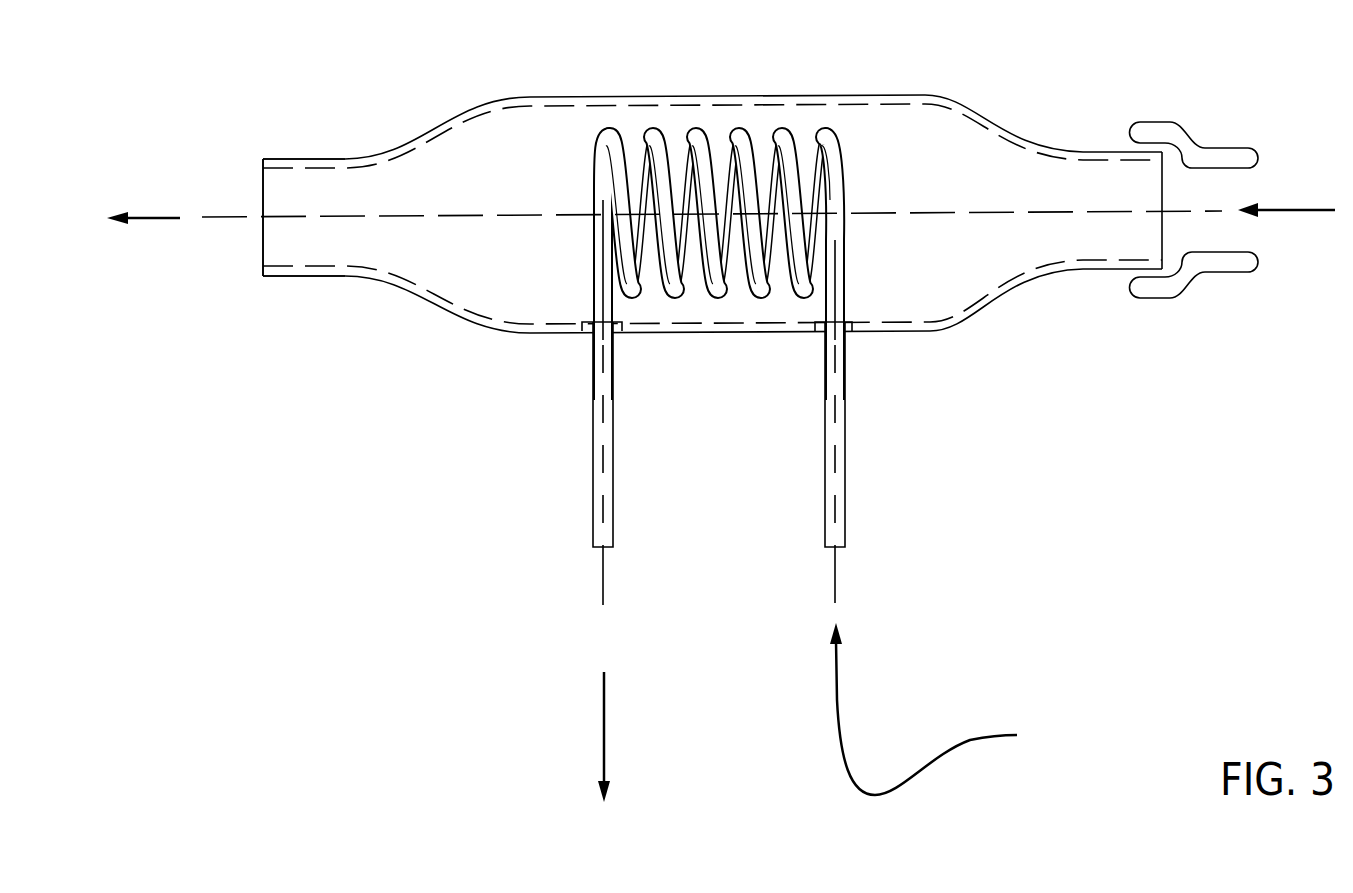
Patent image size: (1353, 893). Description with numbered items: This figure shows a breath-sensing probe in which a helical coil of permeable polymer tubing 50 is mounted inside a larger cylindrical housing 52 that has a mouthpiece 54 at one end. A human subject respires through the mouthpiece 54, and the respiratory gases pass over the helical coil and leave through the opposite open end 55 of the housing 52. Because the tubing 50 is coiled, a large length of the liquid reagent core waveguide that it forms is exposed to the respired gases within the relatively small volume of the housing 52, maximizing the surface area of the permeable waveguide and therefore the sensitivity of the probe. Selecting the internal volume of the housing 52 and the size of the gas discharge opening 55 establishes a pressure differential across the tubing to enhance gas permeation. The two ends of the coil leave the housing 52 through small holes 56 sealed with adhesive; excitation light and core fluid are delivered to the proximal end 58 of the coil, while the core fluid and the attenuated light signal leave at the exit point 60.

The helical coil of permeable polymer tubing 50 is at (701, 128).
The cylindrical housing 52 is at (888, 96).
The mouthpiece 54 is at (1220, 143).
The open end 55 is at (263, 242).
The small holes 56 is at (593, 332).
The proximal end 58 is at (843, 548).
The exit point 60 is at (610, 548).